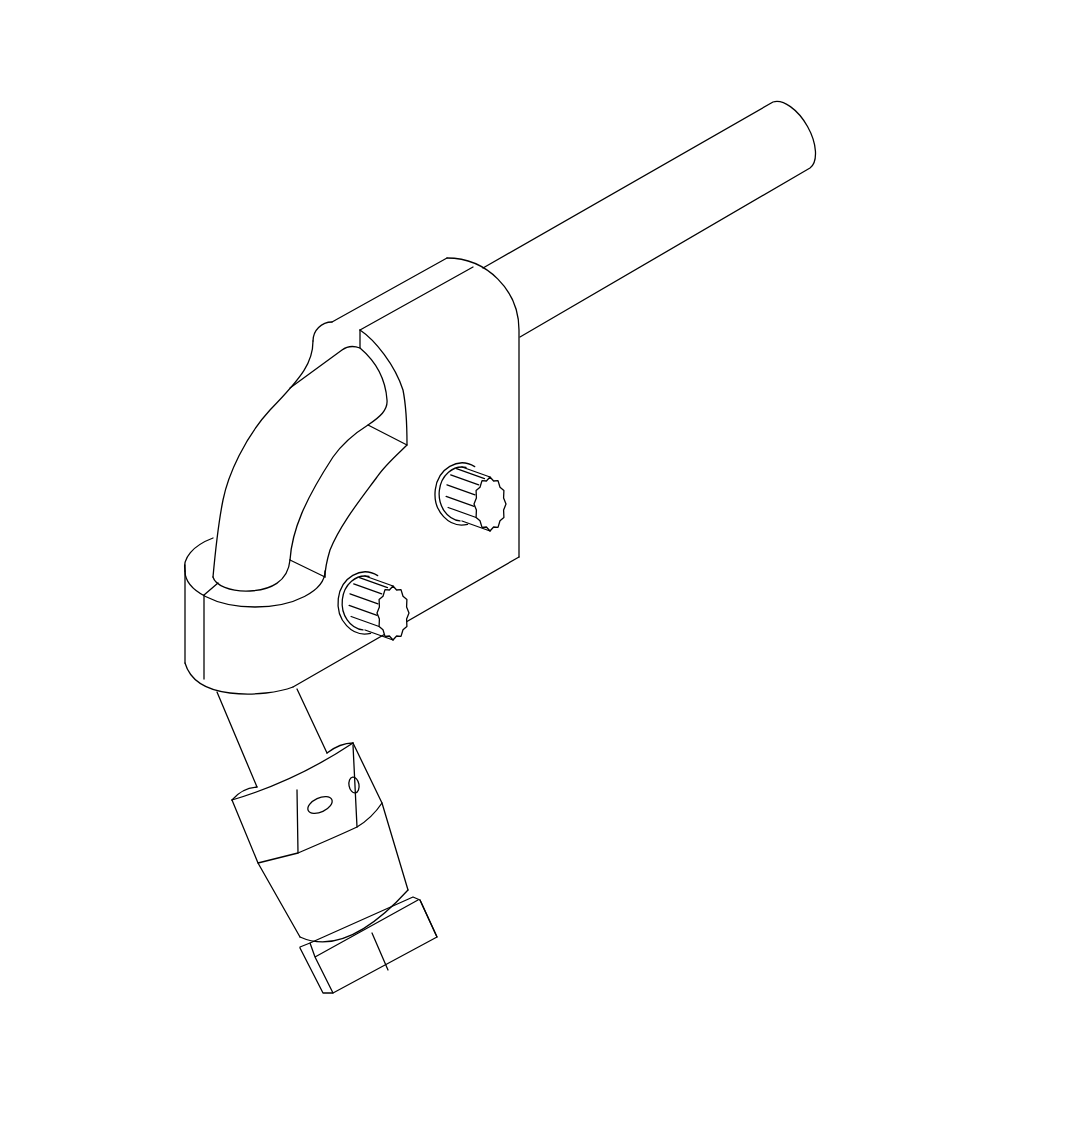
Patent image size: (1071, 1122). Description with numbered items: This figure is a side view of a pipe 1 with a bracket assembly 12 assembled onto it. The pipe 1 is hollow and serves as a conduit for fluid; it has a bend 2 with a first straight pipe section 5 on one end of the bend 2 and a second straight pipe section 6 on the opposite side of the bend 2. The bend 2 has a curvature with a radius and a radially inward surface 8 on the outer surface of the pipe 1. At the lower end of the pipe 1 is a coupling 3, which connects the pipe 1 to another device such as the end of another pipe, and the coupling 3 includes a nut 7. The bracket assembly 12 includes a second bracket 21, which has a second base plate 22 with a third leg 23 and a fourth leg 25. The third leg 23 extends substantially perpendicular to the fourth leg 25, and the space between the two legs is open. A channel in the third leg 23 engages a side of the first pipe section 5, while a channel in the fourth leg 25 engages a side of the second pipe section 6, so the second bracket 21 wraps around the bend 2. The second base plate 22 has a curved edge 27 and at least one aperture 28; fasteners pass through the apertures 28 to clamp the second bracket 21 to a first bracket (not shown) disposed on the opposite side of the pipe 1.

The pipe 1 is at (487, 126).
The bend 2 is at (238, 433).
The coupling 3 is at (411, 860).
The first straight pipe section 5 is at (648, 164).
The second straight pipe section 6 is at (214, 731).
The nut 7 is at (383, 773).
The radially inward surface 8 is at (300, 496).
The bracket assembly 12 is at (563, 535).
The second bracket 21 is at (513, 590).
The second base plate 22 is at (423, 573).
The third leg 23 is at (362, 283).
The fourth leg 25 is at (164, 625).
The curved edge 27 is at (354, 468).
The aperture 28 is at (501, 473).